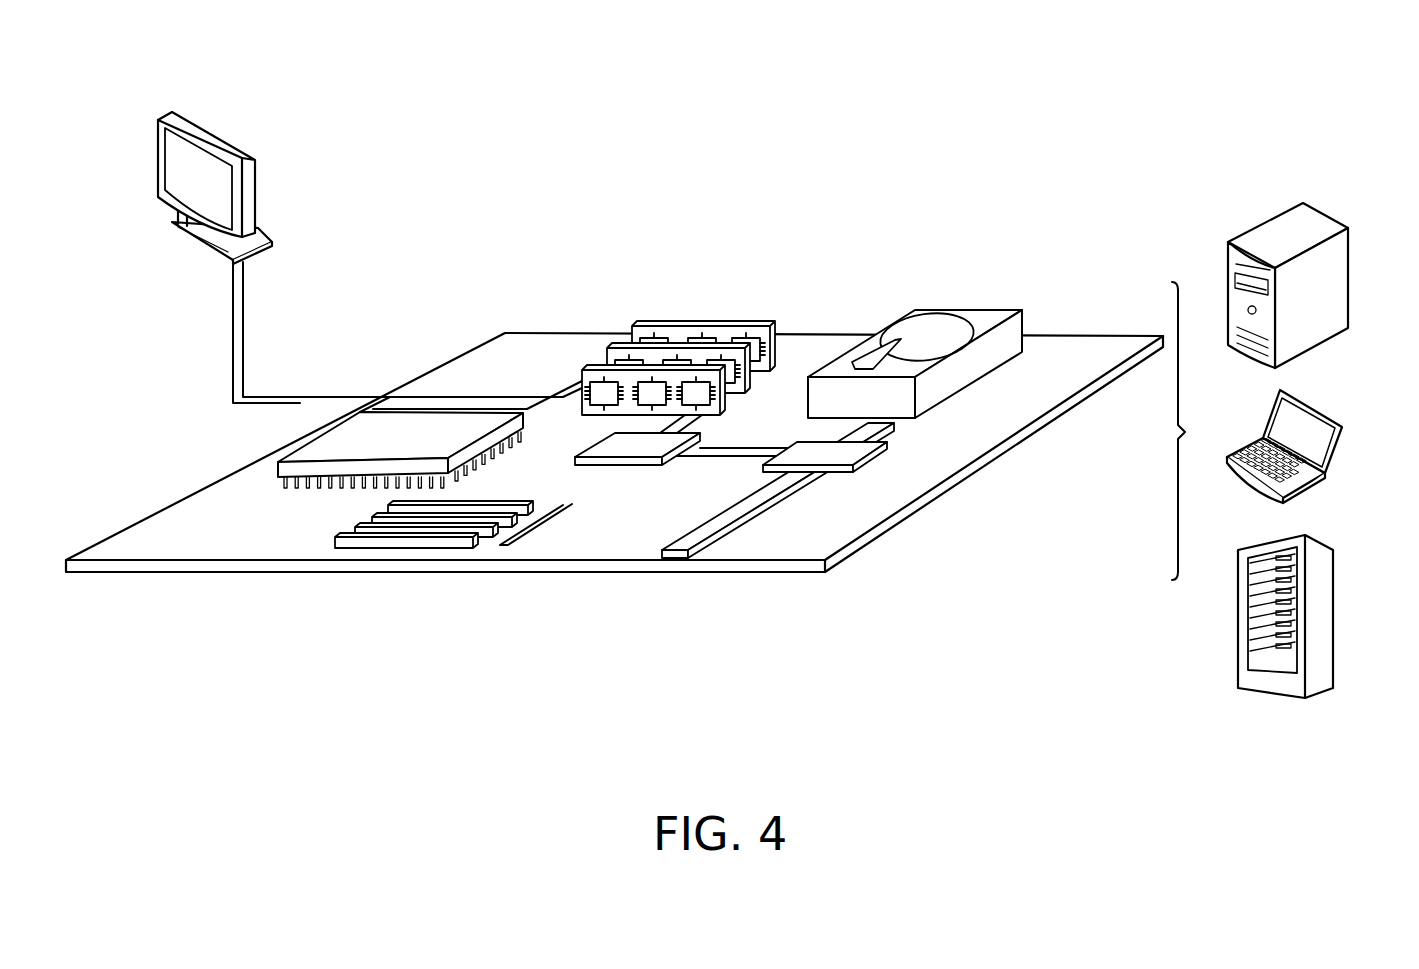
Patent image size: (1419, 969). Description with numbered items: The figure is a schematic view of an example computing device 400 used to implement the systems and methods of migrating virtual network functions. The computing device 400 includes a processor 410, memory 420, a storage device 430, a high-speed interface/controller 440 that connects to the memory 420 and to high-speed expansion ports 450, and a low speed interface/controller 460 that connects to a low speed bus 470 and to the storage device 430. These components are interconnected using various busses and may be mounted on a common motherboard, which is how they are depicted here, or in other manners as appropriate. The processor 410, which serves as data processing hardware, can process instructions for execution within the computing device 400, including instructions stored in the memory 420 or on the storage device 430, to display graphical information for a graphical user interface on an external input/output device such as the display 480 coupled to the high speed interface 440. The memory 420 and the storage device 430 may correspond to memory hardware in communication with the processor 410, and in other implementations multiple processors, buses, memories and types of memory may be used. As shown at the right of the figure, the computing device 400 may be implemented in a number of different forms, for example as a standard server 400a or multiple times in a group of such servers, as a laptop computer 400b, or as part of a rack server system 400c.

The computing device 400 is at (985, 93).
The standard server 400a is at (1262, 225).
The laptop computer 400b is at (1318, 410).
The rack server system 400c is at (1328, 598).
The processor 410 is at (275, 462).
The memory 420 is at (700, 330).
The storage device 430 is at (962, 308).
The high-speed interface/controller 440 is at (647, 465).
The high-speed expansion ports 450 is at (335, 537).
The low speed interface/controller 460 is at (813, 452).
The low speed bus 470 is at (688, 558).
The display 480 is at (157, 168).